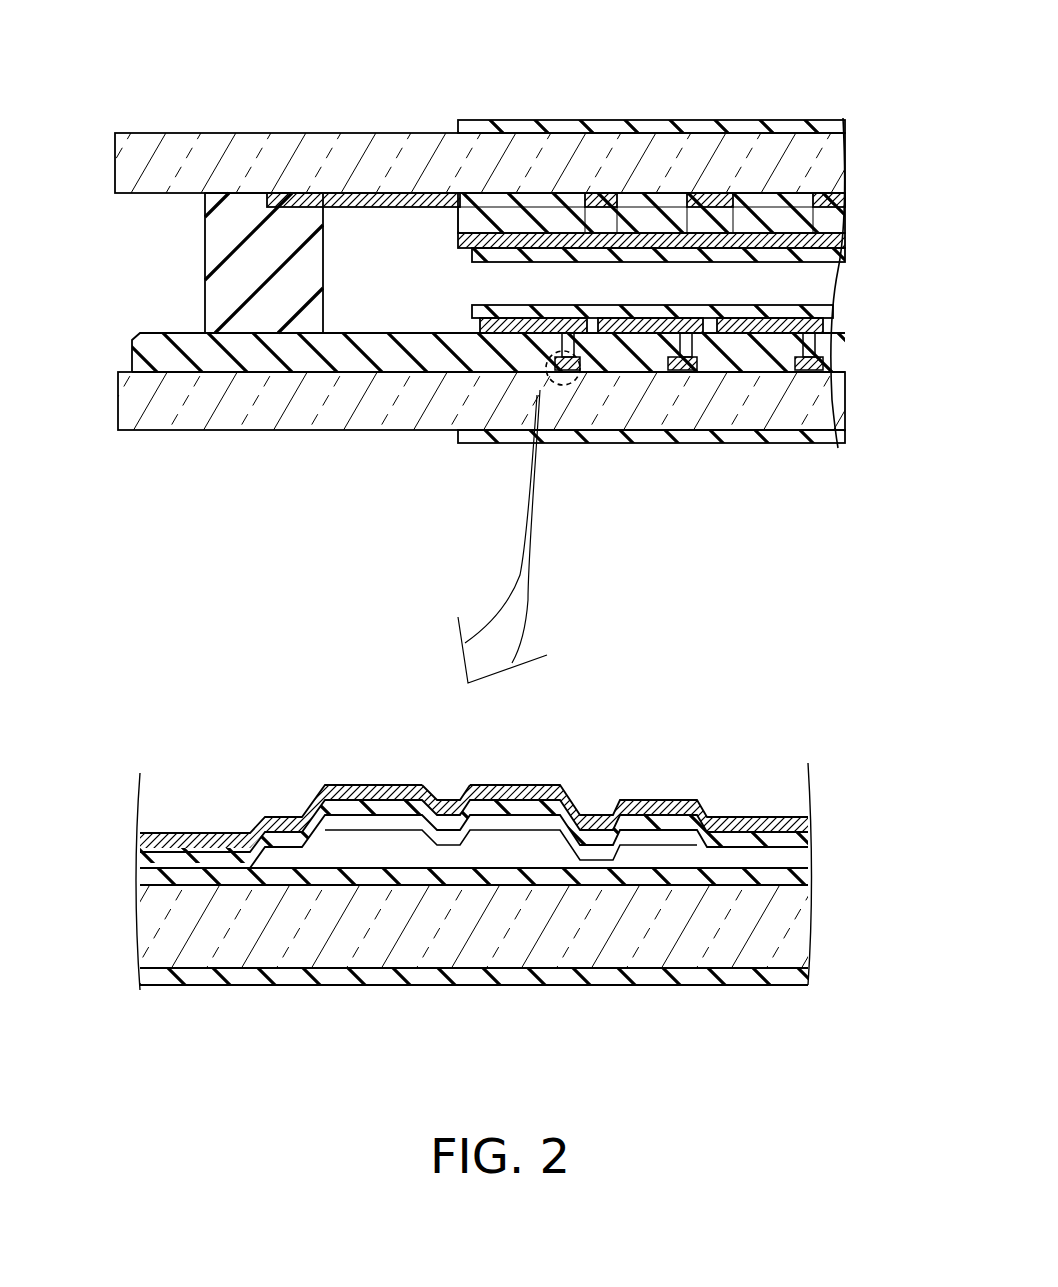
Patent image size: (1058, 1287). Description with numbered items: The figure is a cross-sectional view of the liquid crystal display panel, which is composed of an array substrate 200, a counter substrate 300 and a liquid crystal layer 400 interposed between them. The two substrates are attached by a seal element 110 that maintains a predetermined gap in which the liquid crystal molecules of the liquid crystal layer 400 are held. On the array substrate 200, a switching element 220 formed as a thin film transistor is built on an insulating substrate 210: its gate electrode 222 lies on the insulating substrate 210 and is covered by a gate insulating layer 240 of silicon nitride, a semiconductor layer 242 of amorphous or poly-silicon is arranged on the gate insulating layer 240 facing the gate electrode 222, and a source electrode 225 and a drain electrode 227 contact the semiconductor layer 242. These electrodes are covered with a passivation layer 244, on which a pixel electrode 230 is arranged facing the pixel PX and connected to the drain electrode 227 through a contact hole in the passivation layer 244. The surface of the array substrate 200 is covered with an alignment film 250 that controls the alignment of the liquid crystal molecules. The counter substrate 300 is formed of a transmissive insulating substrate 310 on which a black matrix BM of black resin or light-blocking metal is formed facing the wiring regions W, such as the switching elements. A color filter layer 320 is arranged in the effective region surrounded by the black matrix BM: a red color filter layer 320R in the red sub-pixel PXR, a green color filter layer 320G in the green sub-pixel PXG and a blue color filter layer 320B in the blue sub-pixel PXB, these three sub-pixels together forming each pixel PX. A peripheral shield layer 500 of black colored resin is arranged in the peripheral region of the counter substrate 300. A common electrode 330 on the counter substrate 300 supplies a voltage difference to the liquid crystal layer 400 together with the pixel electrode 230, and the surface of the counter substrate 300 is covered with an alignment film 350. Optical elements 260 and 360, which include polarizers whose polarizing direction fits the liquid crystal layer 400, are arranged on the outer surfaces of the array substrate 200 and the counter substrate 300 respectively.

The seal element 110 is at (205, 293).
The array substrate 200 is at (851, 410).
The insulating substrate 210 is at (118, 410).
The switching element 220 is at (388, 897).
The gate electrode 222 is at (432, 885).
The source electrode 225 is at (368, 827).
The drain electrode 227 is at (533, 820).
The pixel electrode 230 is at (492, 333).
The gate insulating layer 240 is at (797, 880).
The semiconductor layer 242 is at (440, 815).
The passivation layer 244 is at (840, 352).
The alignment film 250 is at (833, 312).
The optical element 260 is at (845, 437).
The counter substrate 300 is at (851, 165).
The insulating substrate 310 is at (118, 166).
The color filter layer 320 is at (845, 200).
The red color filter layer 320R is at (527, 227).
The green color filter layer 320G is at (648, 227).
The blue color filter layer 320B is at (762, 227).
The common electrode 330 is at (845, 240).
The alignment film 350 is at (845, 255).
The optical element 360 is at (845, 121).
The liquid crystal layer 400 is at (815, 285).
The peripheral shield layer 500 is at (377, 193).
The black matrix BM is at (590, 193).
The pixel PX is at (853, 45).
The red sub-pixel PXR is at (467, 107).
The green sub-pixel PXG is at (592, 107).
The blue sub-pixel PXB is at (717, 107).
The wiring region W is at (565, 372).